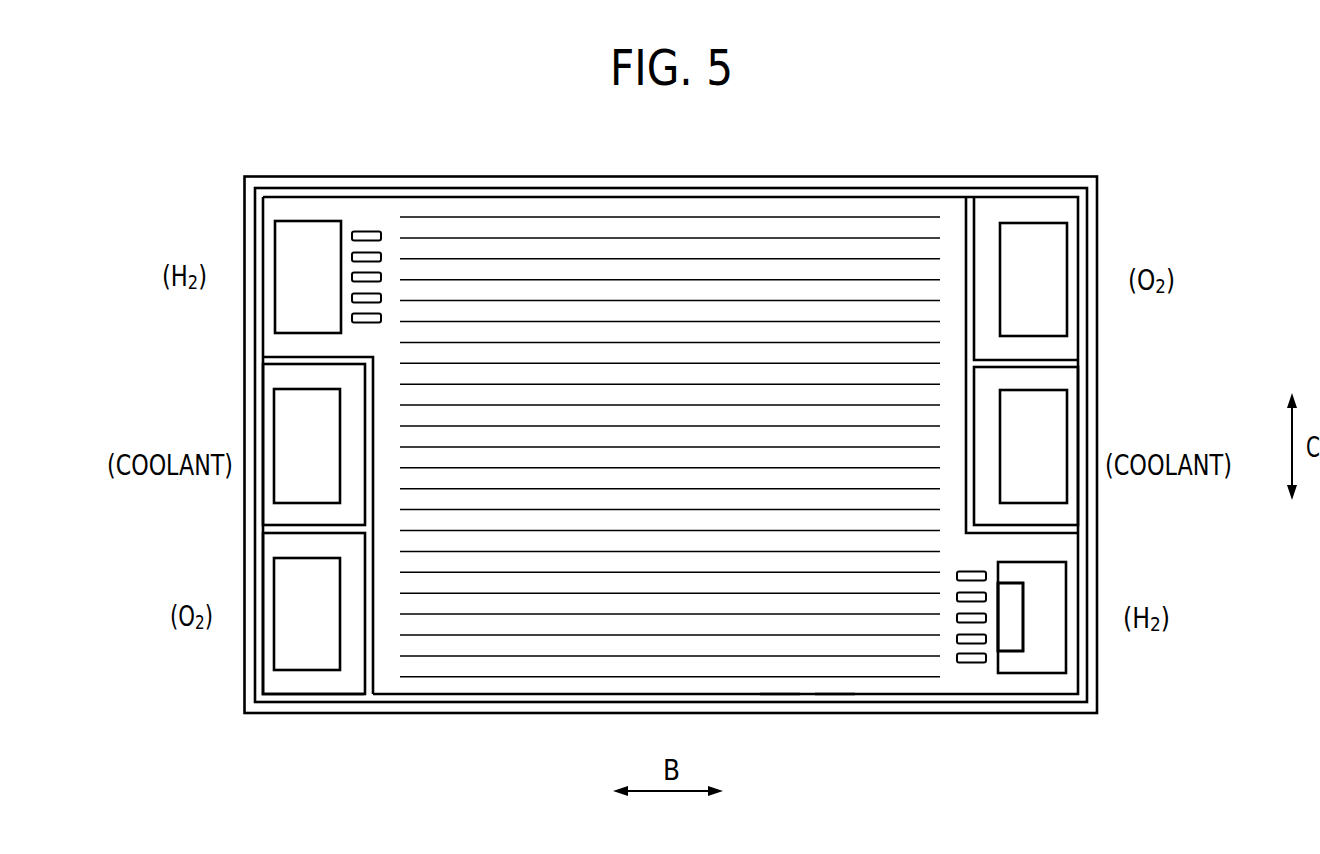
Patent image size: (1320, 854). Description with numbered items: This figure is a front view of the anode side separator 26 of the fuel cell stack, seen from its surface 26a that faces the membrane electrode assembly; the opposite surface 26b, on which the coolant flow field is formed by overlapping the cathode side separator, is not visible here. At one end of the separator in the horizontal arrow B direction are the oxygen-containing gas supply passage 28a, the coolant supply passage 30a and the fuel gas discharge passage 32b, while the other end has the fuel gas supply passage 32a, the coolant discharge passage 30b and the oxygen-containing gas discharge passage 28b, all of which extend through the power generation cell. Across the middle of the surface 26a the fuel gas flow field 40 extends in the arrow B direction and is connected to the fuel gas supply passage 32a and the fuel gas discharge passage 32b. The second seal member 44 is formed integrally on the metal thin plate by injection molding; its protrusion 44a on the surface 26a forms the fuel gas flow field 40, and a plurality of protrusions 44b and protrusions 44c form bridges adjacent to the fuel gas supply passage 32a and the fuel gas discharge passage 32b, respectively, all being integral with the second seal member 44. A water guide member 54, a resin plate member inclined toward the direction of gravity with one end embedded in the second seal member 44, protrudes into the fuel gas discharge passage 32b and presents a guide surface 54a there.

The anode side separator 26 is at (927, 103).
The surface 26a is at (780, 691).
The surface 26b is at (832, 689).
The oxygen-containing gas supply passage 28a is at (1040, 240).
The oxygen-containing gas discharge passage 28b is at (297, 575).
The coolant supply passage 30a is at (1040, 428).
The coolant discharge passage 30b is at (297, 425).
The fuel gas supply passage 32a is at (297, 237).
The fuel gas discharge passage 32b is at (1040, 578).
The fuel gas flow field 40 is at (520, 628).
The second seal member 44 is at (891, 175).
The protrusion 44a is at (818, 196).
The protrusions 44b is at (362, 231).
The protrusions 44c is at (978, 663).
The water guide member 54 is at (1030, 622).
The guide surface 54a is at (1012, 639).